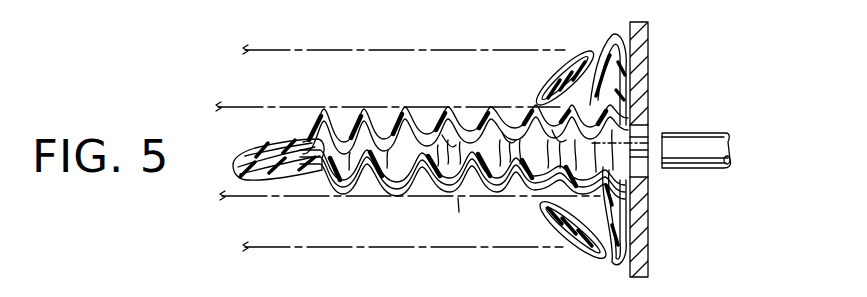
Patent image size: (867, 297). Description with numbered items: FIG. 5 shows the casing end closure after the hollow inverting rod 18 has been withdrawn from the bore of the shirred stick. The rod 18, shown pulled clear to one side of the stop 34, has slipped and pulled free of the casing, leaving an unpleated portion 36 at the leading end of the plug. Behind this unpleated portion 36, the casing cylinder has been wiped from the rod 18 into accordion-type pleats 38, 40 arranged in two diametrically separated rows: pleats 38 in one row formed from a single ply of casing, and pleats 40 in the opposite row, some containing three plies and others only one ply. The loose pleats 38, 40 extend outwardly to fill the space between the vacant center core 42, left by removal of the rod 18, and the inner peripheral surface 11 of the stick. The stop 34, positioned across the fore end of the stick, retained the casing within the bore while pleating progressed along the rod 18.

The inner peripheral surface 11 is at (257, 107).
The unpleated portion 36 is at (276, 176).
The pleats 38 is at (410, 106).
The pleats 40 is at (513, 196).
The stop 34 is at (648, 70).
The center core 42 is at (590, 144).
The hollow inverting rod 18 is at (707, 168).